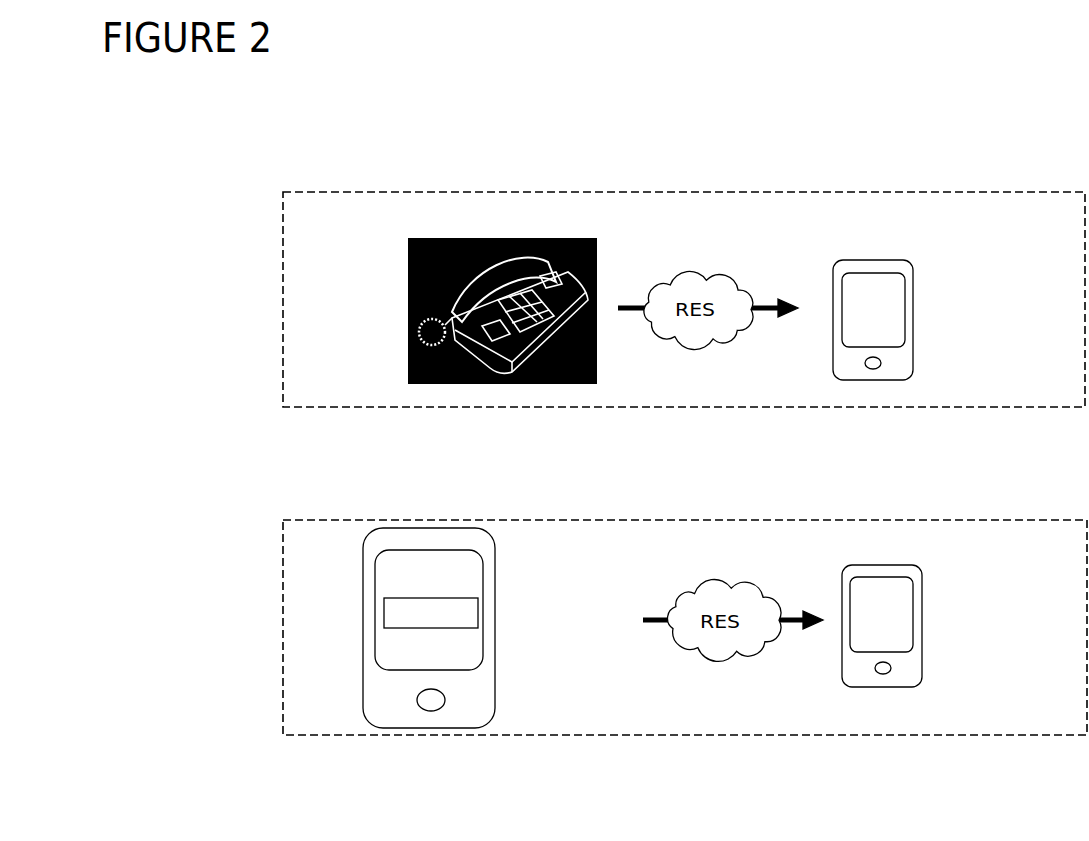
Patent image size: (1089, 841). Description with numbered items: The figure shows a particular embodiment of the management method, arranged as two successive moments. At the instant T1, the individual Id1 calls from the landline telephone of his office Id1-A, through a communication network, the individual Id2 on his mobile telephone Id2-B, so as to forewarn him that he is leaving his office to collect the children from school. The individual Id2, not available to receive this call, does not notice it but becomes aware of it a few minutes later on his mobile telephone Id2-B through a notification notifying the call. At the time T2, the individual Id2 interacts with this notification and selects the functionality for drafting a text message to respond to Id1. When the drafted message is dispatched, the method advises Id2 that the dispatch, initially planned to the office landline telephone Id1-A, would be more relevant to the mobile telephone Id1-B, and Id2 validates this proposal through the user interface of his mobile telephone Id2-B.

The instant T1 is at (1003, 183).
The time T2 is at (877, 520).
The landline telephone at the office Id1-A is at (409, 254).
The mobile telephone Id2-B is at (917, 312).
The mobile telephone Id1-B is at (927, 620).